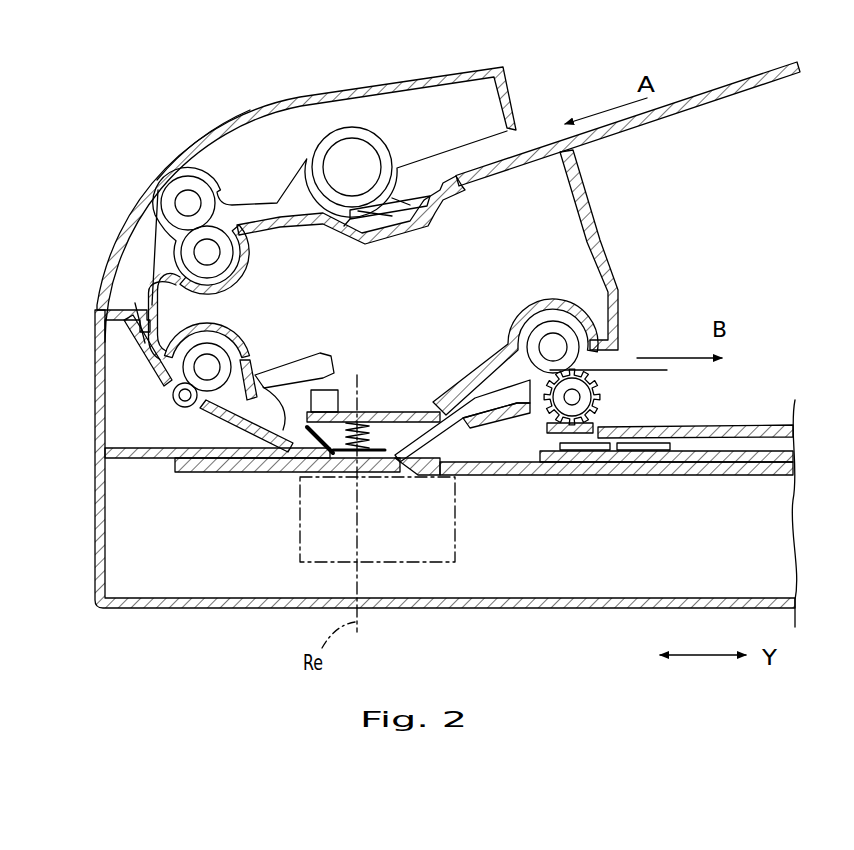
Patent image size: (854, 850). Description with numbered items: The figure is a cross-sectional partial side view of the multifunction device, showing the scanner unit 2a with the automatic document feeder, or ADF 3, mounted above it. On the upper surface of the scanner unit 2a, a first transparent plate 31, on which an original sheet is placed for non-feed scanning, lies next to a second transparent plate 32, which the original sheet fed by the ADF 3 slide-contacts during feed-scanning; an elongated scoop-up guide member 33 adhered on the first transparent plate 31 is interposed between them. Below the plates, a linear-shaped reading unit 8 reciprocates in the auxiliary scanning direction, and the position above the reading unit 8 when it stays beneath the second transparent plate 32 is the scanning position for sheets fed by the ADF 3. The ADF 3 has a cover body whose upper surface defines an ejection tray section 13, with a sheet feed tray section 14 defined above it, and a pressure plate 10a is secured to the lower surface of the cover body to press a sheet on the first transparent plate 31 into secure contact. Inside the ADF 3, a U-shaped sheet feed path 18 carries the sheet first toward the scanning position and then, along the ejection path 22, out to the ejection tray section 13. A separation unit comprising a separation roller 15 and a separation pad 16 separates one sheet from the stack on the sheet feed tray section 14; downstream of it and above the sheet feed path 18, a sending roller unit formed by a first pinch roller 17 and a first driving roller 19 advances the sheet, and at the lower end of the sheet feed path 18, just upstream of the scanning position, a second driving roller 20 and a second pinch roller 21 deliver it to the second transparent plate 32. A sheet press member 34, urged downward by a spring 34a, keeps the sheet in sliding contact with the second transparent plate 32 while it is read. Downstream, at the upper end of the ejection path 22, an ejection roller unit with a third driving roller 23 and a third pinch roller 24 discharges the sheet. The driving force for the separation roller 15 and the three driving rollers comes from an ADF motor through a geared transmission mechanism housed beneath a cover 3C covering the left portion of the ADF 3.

The ADF 3 is at (421, 76).
The cover 3C is at (279, 97).
The scanner unit 2a is at (575, 608).
The sheet feed tray section 14 is at (705, 93).
The separation roller 15 is at (352, 135).
The separation pad 16 is at (394, 204).
The first pinch roller 17 is at (190, 203).
The first driving roller 19 is at (227, 252).
The second driving roller 20 is at (215, 360).
The sheet feed path 18 is at (138, 345).
The second pinch roller 21 is at (172, 400).
The sheet press member 34 is at (338, 452).
The spring 34a is at (372, 438).
The ejection path 22 is at (490, 422).
The third driving roller 23 is at (553, 332).
The third pinch roller 24 is at (585, 398).
The ejection tray section 13 is at (716, 430).
The pressure plate 10a is at (770, 454).
The first transparent plate 31 is at (680, 476).
The second transparent plate 32 is at (247, 473).
The scoop-up guide member 33 is at (430, 476).
The reading unit 8 is at (425, 550).